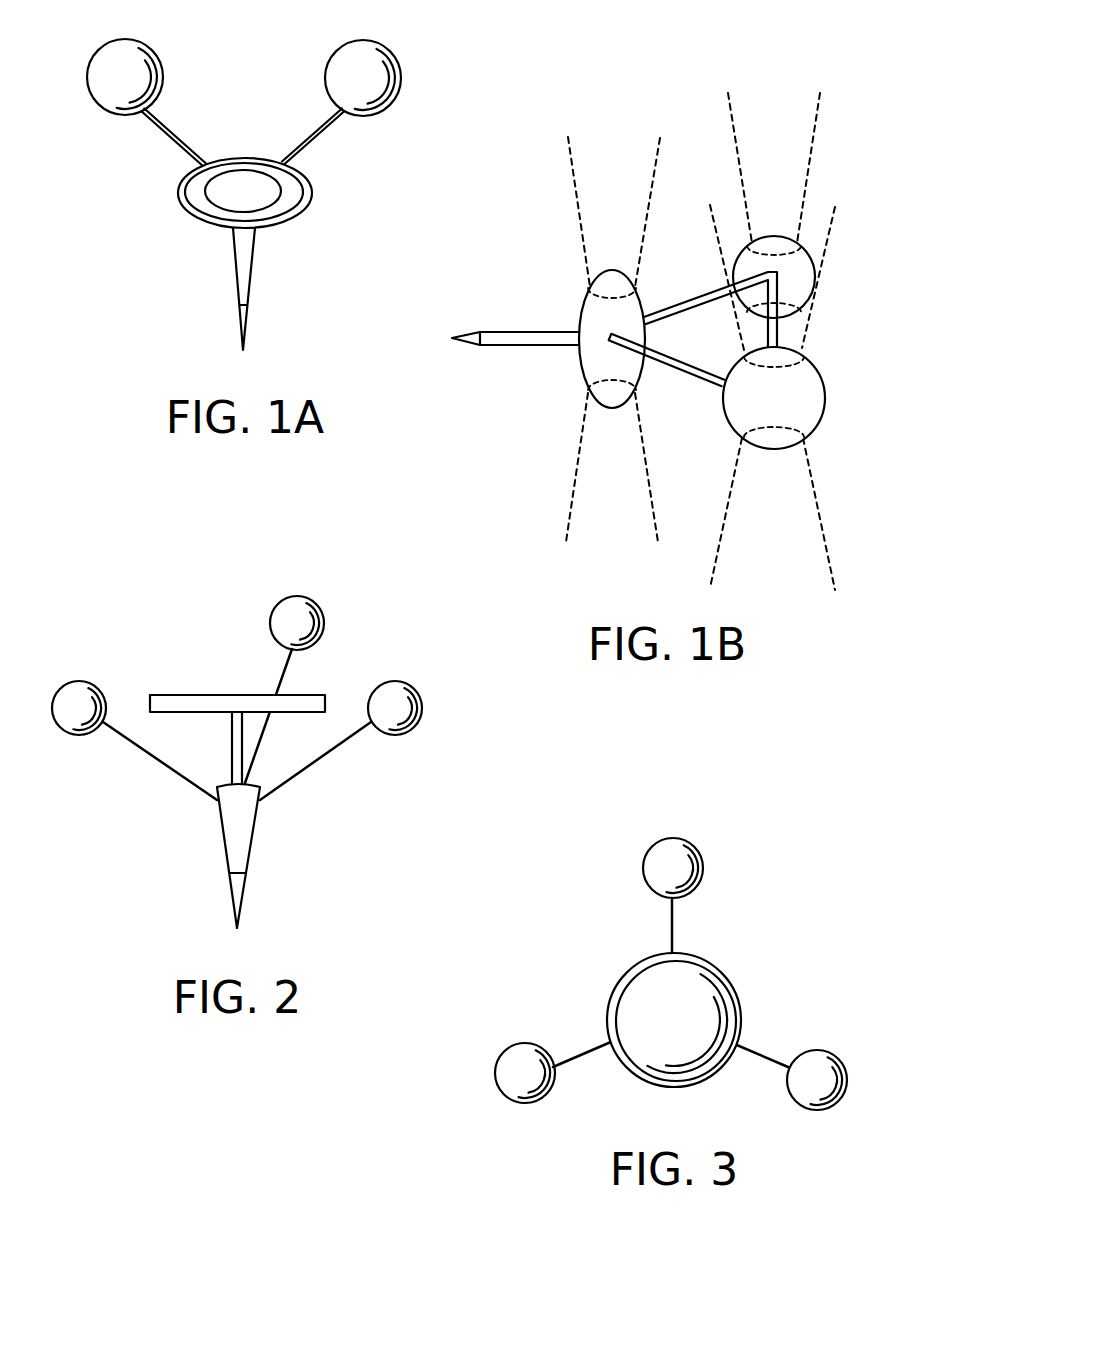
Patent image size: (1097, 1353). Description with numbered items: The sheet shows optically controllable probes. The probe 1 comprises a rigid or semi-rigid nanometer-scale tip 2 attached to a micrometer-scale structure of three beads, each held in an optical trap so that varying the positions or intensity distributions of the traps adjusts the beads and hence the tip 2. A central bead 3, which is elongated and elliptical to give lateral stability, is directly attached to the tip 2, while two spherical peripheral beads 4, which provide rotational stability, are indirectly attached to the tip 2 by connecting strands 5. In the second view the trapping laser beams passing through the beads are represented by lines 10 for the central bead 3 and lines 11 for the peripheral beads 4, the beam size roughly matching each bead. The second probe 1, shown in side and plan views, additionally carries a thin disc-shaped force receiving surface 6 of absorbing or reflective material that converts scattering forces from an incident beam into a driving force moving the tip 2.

In FIG. 1A, the probe 1 is at (242, 179).
In FIG. 1B, the probe 1 is at (667, 341).
In FIG. 1A, the tip 2 is at (249, 320).
In FIG. 1B, the tip 2 is at (507, 341).
In FIG. 2, the tip 2 is at (253, 828).
In FIG. 1A, the central bead 3 is at (308, 205).
In FIG. 1B, the central bead 3 is at (584, 370).
In FIG. 1A, the peripheral beads 4 is at (147, 45).
In FIG. 1B, the peripheral beads 4 is at (812, 256).
In FIG. 2, the peripheral beads 4 is at (413, 686).
In FIG. 3, the peripheral beads 4 is at (832, 1053).
In FIG. 1A, the connecting strands 5 is at (170, 133).
In FIG. 1B, the connecting strands 5 is at (693, 329).
In FIG. 2, the connecting strands 5 is at (160, 768).
In FIG. 3, the connecting strands 5 is at (582, 1052).
In FIG. 2, the force receiving surface 6 is at (194, 696).
In FIG. 3, the force receiving surface 6 is at (724, 985).
In FIG. 1B, the lines representing trapping laser beams for bead 3 10 is at (571, 183).
In FIG. 1B, the lines representing trapping laser beams for beads 4 11 is at (817, 148).